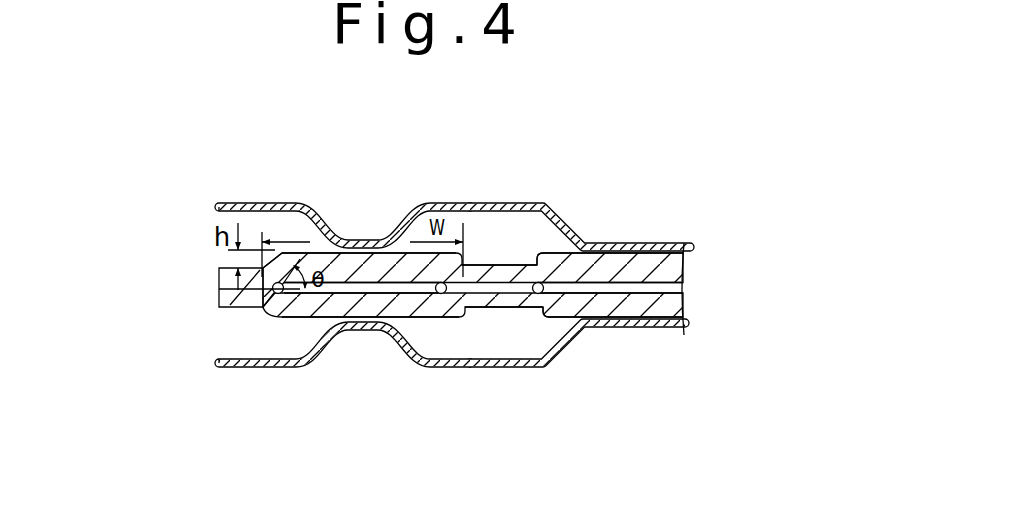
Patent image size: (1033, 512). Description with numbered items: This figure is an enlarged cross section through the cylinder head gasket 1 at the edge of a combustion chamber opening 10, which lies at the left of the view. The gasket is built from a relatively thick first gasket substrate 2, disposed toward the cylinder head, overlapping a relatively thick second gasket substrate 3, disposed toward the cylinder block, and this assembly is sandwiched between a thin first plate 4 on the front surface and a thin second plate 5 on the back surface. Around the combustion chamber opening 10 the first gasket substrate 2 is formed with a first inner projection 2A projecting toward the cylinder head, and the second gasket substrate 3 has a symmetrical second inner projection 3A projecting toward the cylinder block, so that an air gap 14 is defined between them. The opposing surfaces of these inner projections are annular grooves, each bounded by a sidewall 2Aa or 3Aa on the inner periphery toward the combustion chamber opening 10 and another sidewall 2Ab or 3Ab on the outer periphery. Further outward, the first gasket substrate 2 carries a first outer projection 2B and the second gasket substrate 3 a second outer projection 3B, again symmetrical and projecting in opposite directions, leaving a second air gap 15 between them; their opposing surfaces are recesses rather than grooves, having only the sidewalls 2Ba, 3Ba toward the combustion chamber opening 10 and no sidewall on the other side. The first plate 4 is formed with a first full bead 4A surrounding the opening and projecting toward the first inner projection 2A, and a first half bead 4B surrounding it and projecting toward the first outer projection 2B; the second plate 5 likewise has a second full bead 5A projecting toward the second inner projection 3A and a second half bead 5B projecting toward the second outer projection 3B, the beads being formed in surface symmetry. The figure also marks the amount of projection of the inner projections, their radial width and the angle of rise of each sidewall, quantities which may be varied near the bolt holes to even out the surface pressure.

The cylinder head gasket 1 is at (440, 288).
The first gasket substrate 2 is at (464, 261).
The first inner projection 2A is at (278, 252).
The sidewall 2Aa is at (283, 293).
The sidewall 2Ab is at (499, 240).
The first outer projection 2B is at (584, 242).
The sidewall 2Ba is at (545, 260).
The second gasket substrate 3 is at (470, 350).
The second inner projection 3A is at (305, 368).
The sidewall 3Aa is at (273, 308).
The sidewall 3Ab is at (443, 305).
The second outer projection 3B is at (640, 325).
The sidewall 3Ba is at (540, 307).
The first plate 4 is at (457, 167).
The first full bead 4A is at (352, 242).
The first half bead 4B is at (566, 230).
The second plate 5 is at (452, 401).
The second full bead 5A is at (392, 330).
The second half bead 5B is at (560, 357).
The combustion chamber opening 10 is at (218, 270).
The air gap 14 is at (375, 293).
The air gap 15 is at (572, 290).